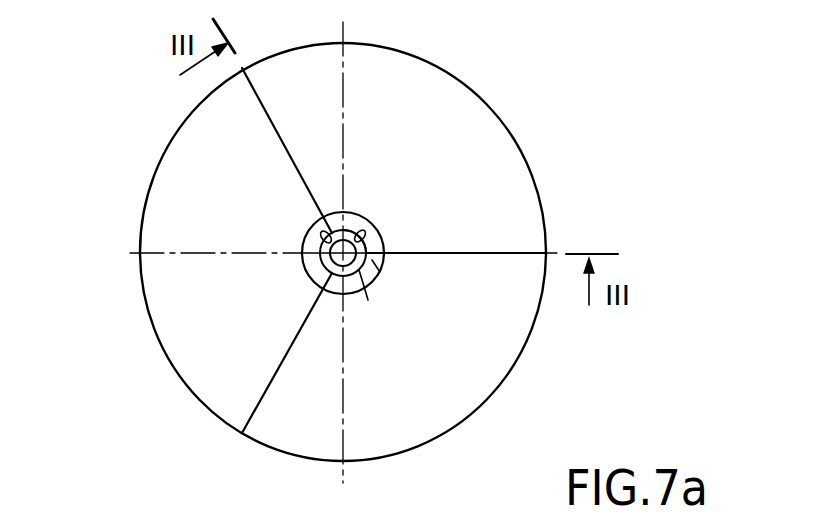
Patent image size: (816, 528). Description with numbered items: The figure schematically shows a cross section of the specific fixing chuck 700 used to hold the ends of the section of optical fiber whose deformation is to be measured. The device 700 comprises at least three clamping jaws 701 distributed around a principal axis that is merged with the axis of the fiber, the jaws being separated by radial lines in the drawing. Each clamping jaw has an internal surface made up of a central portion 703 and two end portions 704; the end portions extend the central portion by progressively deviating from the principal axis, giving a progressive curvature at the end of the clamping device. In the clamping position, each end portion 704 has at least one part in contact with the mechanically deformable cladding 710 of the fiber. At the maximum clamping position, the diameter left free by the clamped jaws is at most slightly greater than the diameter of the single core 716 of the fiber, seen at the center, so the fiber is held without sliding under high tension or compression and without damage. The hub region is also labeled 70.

The fixing chuck 700 is at (502, 76).
The clamping jaws 701 is at (510, 178).
The hub 70 is at (357, 228).
The central portion 703 is at (330, 230).
The end portions 704 is at (368, 300).
The mechanically deformable cladding 710 is at (383, 269).
The single core 716 is at (326, 268).